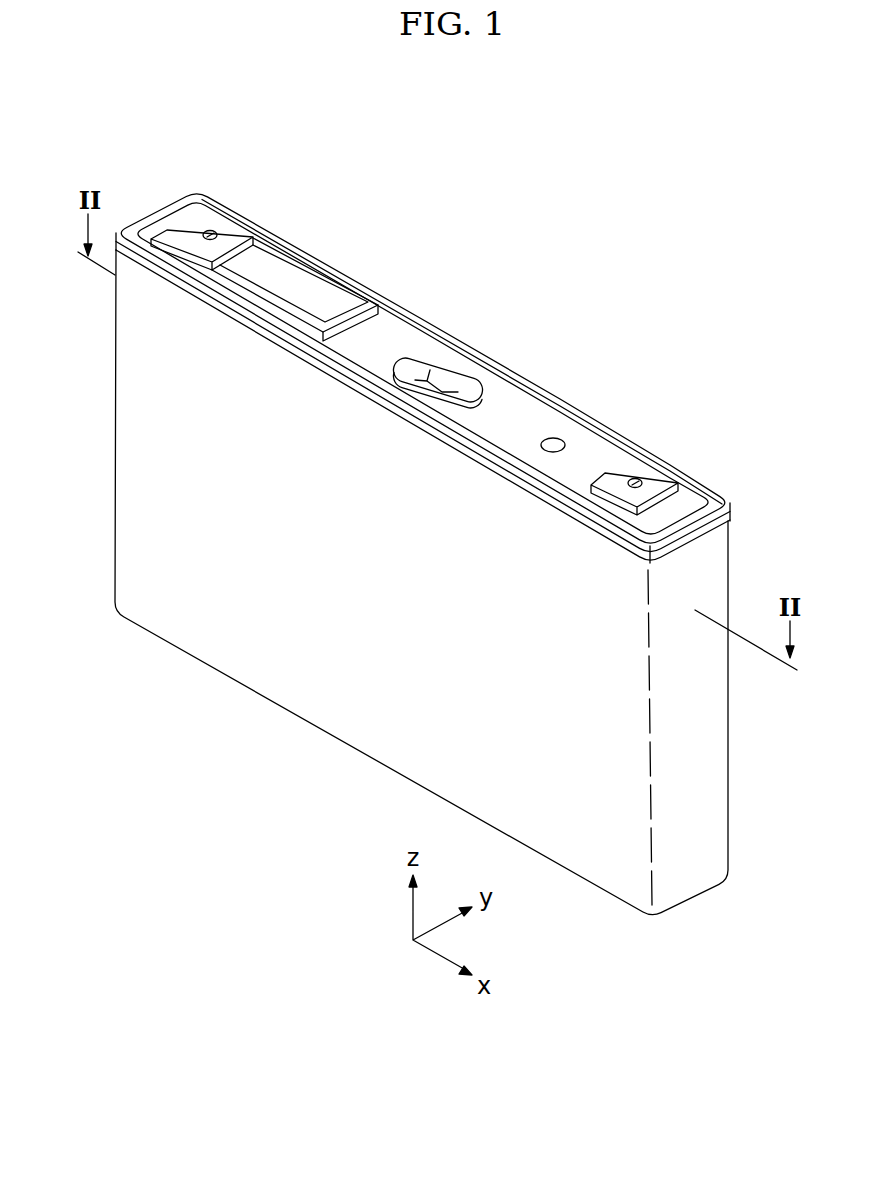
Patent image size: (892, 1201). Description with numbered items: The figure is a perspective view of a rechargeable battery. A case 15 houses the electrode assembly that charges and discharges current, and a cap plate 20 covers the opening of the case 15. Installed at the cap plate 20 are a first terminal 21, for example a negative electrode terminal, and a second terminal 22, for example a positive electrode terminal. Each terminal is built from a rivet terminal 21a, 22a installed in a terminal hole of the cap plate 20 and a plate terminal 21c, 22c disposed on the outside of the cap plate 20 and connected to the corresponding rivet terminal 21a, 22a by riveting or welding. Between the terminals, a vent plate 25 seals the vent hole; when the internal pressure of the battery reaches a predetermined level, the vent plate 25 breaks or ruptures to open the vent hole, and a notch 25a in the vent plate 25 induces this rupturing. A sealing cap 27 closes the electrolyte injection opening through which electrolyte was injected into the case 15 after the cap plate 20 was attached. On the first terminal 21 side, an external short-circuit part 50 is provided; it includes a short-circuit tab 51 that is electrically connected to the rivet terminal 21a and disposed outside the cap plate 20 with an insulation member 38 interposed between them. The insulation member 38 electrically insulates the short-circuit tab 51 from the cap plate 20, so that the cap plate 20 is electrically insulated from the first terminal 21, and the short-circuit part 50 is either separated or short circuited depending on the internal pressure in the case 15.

The case 15 is at (353, 717).
The cap plate 20 is at (522, 412).
The first terminal 21 is at (229, 200).
The rivet terminal 21a is at (211, 230).
The plate terminal 21c is at (238, 233).
The second terminal 22 is at (697, 444).
The rivet terminal 22a is at (642, 485).
The plate terminal 22c is at (662, 487).
The vent plate 25 is at (477, 351).
The notch 25a is at (463, 380).
The sealing cap 27 is at (563, 438).
The insulation member 38 is at (273, 247).
The external short-circuit part 50 is at (325, 264).
The short-circuit tab 51 is at (323, 305).